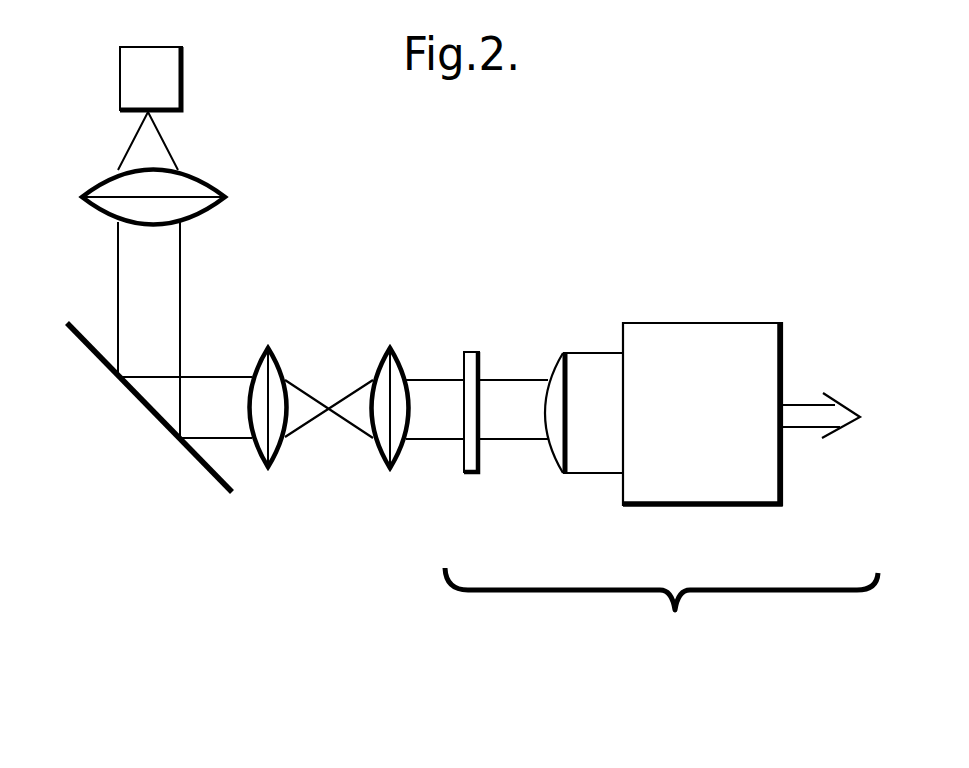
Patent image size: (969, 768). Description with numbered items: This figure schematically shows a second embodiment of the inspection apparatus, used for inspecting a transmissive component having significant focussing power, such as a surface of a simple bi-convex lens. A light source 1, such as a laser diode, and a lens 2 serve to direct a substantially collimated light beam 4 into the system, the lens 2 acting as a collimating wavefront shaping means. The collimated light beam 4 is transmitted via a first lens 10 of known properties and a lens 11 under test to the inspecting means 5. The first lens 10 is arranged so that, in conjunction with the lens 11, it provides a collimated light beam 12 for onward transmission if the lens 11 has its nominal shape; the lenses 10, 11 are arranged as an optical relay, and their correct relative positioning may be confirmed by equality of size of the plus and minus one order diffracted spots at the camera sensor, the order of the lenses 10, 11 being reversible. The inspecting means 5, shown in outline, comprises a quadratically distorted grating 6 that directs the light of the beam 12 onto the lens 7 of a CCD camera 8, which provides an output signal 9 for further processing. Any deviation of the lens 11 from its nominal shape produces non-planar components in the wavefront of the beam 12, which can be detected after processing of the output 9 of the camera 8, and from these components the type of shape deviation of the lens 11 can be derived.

The light source 1 is at (167, 90).
The lens 2 is at (198, 187).
The collimated light beam 4 is at (222, 421).
The inspecting means 5 is at (661, 610).
The quadratically distorted grating 6 is at (470, 473).
The lens of CCD camera 7 is at (557, 452).
The CCD camera 8 is at (711, 436).
The output signal 9 is at (808, 418).
The first lens 10 is at (268, 466).
The lens under test 11 is at (390, 470).
The collimated light beam 12 is at (446, 426).